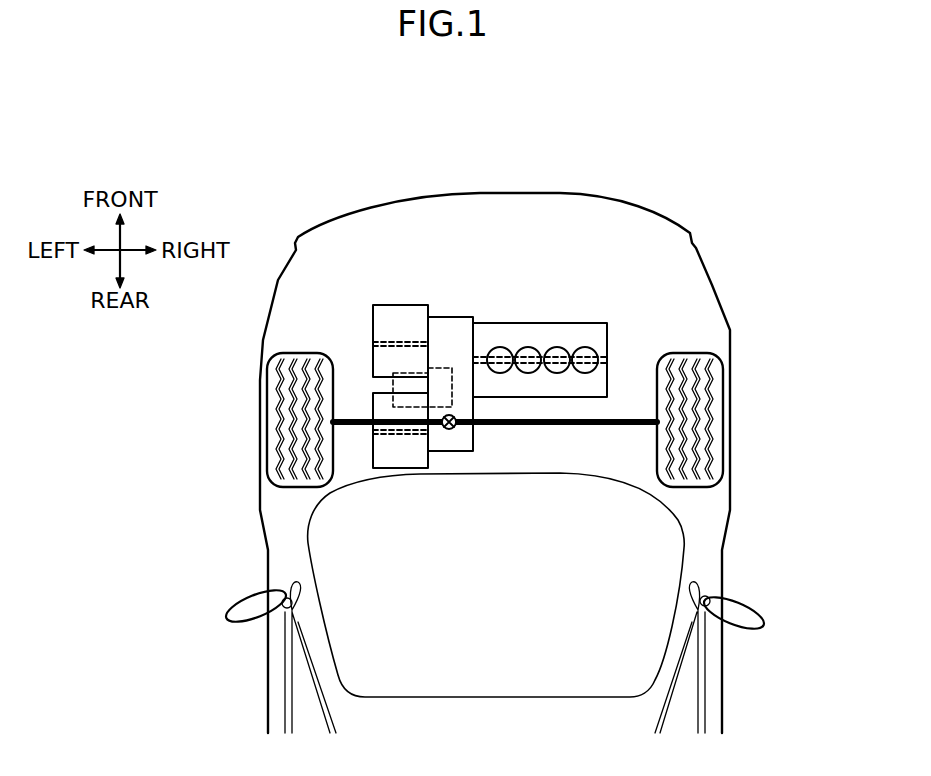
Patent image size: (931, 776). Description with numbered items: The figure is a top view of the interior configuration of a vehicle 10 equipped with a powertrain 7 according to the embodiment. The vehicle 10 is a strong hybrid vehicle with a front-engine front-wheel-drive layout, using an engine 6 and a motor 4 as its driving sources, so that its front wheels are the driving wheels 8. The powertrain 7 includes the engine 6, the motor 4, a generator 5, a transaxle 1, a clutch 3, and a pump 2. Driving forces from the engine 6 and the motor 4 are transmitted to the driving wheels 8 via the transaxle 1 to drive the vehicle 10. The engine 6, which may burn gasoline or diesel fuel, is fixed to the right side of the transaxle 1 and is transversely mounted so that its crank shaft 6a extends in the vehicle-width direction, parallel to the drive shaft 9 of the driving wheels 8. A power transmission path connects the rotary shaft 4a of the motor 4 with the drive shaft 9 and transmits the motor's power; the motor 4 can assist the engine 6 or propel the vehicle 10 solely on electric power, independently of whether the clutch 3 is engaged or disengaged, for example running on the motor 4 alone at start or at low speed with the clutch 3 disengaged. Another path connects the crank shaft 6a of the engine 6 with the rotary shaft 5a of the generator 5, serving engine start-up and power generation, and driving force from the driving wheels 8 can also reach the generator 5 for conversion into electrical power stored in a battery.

The transaxle 1 is at (457, 317).
The pump 2 is at (375, 386).
The clutch 3 is at (437, 368).
The motor 4 is at (373, 445).
The rotary shaft 4a is at (408, 435).
The generator 5 is at (403, 305).
The rotary shaft 5a is at (388, 342).
The engine 6 is at (533, 323).
The crank shaft 6a is at (484, 357).
The powertrain 7 is at (602, 298).
The driving wheels 8 is at (273, 405).
The drive shaft 9 is at (623, 425).
The vehicle 10 is at (785, 258).